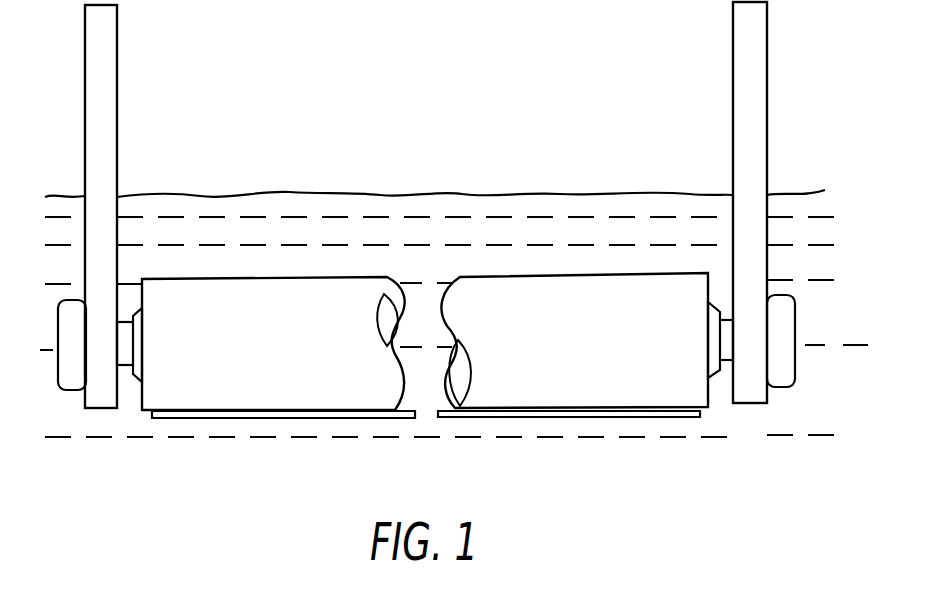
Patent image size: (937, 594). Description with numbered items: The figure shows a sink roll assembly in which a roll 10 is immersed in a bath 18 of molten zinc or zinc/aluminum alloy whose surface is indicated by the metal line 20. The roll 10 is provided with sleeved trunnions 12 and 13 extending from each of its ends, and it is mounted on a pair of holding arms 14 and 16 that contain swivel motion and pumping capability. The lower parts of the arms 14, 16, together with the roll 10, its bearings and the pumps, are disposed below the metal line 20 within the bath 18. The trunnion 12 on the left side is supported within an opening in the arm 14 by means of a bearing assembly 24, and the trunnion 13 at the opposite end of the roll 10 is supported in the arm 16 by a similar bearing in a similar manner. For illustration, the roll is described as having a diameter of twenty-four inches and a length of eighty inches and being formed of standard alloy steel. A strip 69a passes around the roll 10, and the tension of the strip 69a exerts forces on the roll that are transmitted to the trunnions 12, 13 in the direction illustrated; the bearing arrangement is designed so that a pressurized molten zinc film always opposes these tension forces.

The roll 10 is at (548, 275).
The trunnion 12 is at (124, 400).
The trunnion 13 is at (725, 398).
The holding arm 14 is at (109, 83).
The holding arm 16 is at (760, 101).
The bath 18 is at (263, 225).
The metal line 20 is at (462, 195).
The bearing assembly 24 is at (796, 330).
The strip 69a is at (231, 420).